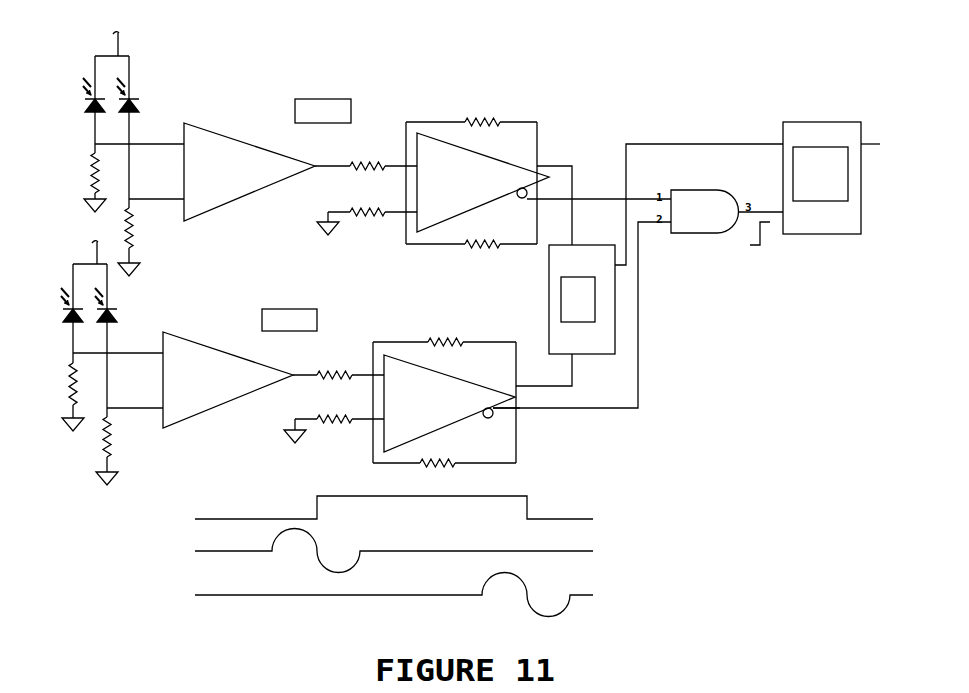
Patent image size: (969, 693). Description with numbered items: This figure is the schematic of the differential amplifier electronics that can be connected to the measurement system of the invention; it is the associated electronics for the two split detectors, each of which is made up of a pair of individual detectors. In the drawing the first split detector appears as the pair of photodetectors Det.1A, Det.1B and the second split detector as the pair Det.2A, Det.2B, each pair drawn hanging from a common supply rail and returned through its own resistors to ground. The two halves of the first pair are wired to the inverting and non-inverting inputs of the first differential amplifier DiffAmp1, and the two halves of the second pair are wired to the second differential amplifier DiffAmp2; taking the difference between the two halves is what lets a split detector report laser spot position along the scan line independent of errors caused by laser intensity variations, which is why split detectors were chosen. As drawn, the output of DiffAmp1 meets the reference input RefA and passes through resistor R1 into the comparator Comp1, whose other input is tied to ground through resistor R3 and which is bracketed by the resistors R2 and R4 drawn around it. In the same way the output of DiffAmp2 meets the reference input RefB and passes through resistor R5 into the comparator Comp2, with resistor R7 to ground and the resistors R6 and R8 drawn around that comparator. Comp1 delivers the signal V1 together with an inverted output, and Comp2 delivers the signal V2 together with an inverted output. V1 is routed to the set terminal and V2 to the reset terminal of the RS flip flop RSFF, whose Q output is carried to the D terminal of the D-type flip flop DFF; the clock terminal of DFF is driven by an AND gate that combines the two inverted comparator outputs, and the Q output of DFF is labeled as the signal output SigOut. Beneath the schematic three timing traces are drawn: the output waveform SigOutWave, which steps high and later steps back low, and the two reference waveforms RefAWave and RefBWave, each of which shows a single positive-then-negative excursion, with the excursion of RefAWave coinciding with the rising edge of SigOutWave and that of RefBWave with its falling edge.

The photodetector 1A Det.1A is at (156, 84).
The photodetector 1B Det.1B is at (67, 84).
The photodetector 2A Det.2A is at (133, 293).
The photodetector 2B Det.2B is at (45, 293).
The differential amplifier 1 DiffAmp1 is at (249, 174).
The differential amplifier 2 DiffAmp2 is at (228, 384).
The reference A input RefA is at (332, 162).
The reference B input RefB is at (305, 367).
The resistor R1 is at (366, 157).
The resistor R2 is at (471, 113).
The resistor R3 is at (367, 212).
The resistor R4 is at (471, 234).
The resistor R5 is at (338, 367).
The resistor R6 is at (444, 333).
The resistor R7 is at (334, 420).
The resistor R8 is at (444, 454).
The comparator 1 Comp1 is at (483, 182).
The comparator 2 Comp2 is at (449, 403).
The comparator 1 output V1 is at (557, 195).
The comparator 2 output V2 is at (544, 370).
The RS flip flop RSFF is at (560, 299).
The D-type flip flop DFF is at (822, 167).
The signal output SigOut is at (887, 153).
The Sig. Out waveform SigOutWave is at (389, 507).
The Ref A waveform RefAWave is at (390, 551).
The Ref B waveform RefBWave is at (390, 595).